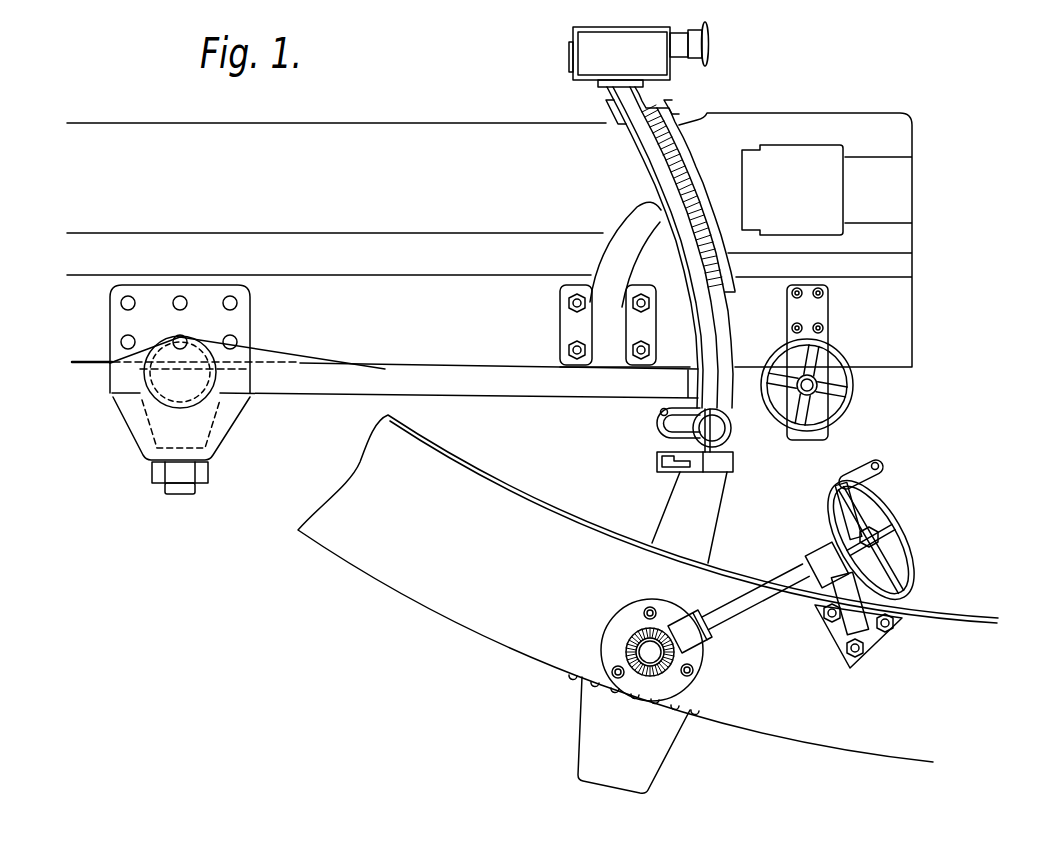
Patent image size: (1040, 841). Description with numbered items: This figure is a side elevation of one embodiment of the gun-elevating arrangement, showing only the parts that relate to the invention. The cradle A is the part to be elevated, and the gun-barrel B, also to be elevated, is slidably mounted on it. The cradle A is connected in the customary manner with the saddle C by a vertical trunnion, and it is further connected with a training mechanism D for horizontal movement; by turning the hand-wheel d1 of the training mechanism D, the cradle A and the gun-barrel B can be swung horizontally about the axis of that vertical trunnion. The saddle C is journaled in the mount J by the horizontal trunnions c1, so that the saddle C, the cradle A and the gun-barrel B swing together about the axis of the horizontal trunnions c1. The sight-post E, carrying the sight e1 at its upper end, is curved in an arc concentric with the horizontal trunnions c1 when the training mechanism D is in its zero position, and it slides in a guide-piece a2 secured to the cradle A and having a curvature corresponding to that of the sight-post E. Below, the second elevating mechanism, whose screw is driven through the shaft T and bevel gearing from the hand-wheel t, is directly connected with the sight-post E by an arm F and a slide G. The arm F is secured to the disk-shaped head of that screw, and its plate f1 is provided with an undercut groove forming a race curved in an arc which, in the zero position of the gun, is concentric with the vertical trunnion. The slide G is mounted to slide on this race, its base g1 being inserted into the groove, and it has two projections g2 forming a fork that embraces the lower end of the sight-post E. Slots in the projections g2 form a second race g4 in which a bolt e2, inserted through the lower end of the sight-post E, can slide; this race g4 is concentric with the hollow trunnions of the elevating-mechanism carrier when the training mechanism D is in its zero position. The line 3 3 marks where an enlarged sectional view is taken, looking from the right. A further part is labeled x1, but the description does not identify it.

The cradle A is at (482, 345).
The gun-barrel B is at (358, 152).
The saddle C is at (360, 384).
The training mechanism D is at (823, 360).
The sight-post E is at (650, 115).
The arm F is at (700, 541).
The slide G is at (677, 442).
The mount J is at (413, 589).
The shaft T is at (762, 602).
The hand-wheel t is at (905, 545).
The guide-piece a2 is at (690, 170).
The horizontal trunnions c1 is at (146, 372).
The hand-wheel d1 is at (851, 398).
The sight e1 is at (585, 43).
The bolt e2 is at (733, 435).
The plate f1 is at (733, 466).
The base g1 is at (684, 474).
The projections g2 is at (660, 410).
The second race g4 is at (673, 422).
The bracket x1 is at (153, 433).
The section line 3 3 is at (746, 362).